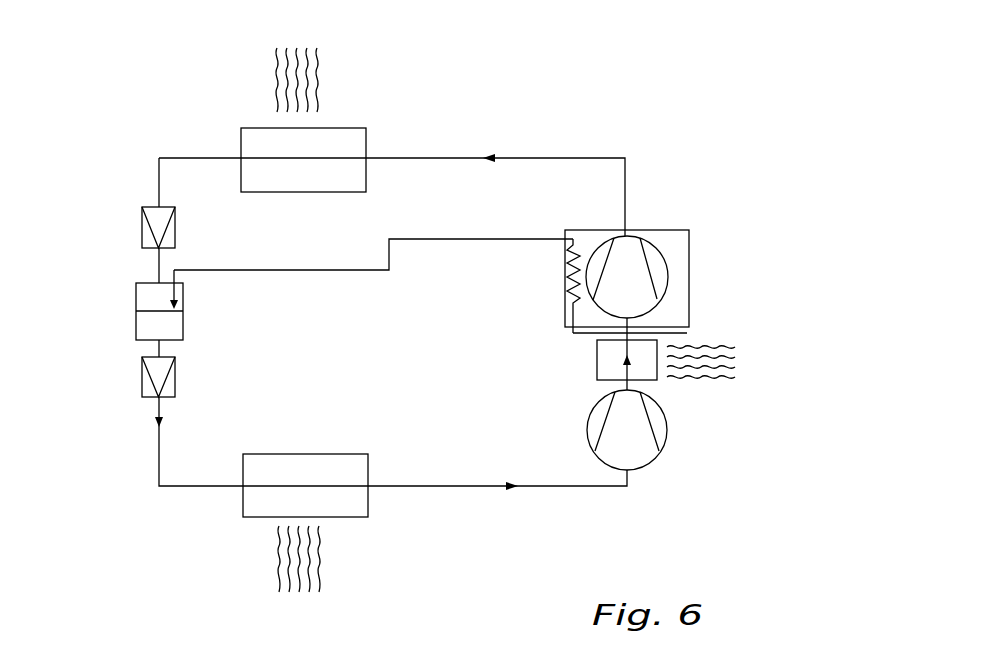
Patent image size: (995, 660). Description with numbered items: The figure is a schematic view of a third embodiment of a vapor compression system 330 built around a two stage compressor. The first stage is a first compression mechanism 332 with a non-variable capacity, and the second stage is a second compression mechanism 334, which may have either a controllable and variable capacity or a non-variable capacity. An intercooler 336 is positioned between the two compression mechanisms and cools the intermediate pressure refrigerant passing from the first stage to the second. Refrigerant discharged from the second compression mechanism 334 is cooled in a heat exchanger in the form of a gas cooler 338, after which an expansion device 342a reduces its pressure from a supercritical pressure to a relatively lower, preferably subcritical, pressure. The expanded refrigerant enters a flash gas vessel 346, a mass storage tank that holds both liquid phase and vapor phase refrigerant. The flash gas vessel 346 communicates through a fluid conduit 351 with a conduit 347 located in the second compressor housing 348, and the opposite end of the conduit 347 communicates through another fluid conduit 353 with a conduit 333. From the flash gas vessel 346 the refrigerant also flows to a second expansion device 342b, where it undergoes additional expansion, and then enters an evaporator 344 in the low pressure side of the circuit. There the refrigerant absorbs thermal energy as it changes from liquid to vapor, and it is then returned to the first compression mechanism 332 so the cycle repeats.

The vapor compression system 330 is at (657, 119).
The first compression mechanism 332 is at (666, 425).
The conduit 333 is at (632, 333).
The second compression mechanism 334 is at (690, 270).
The intercooler 336 is at (597, 368).
The gas cooler 338 is at (368, 143).
The expansion device 342a is at (142, 225).
The second expansion device 342b is at (142, 382).
The evaporator 344 is at (368, 510).
The flash gas vessel 346 is at (136, 318).
The conduit 347 is at (588, 240).
The second compressor housing 348 is at (682, 238).
The fluid conduit 351 is at (292, 270).
The fluid conduit 353 is at (580, 340).